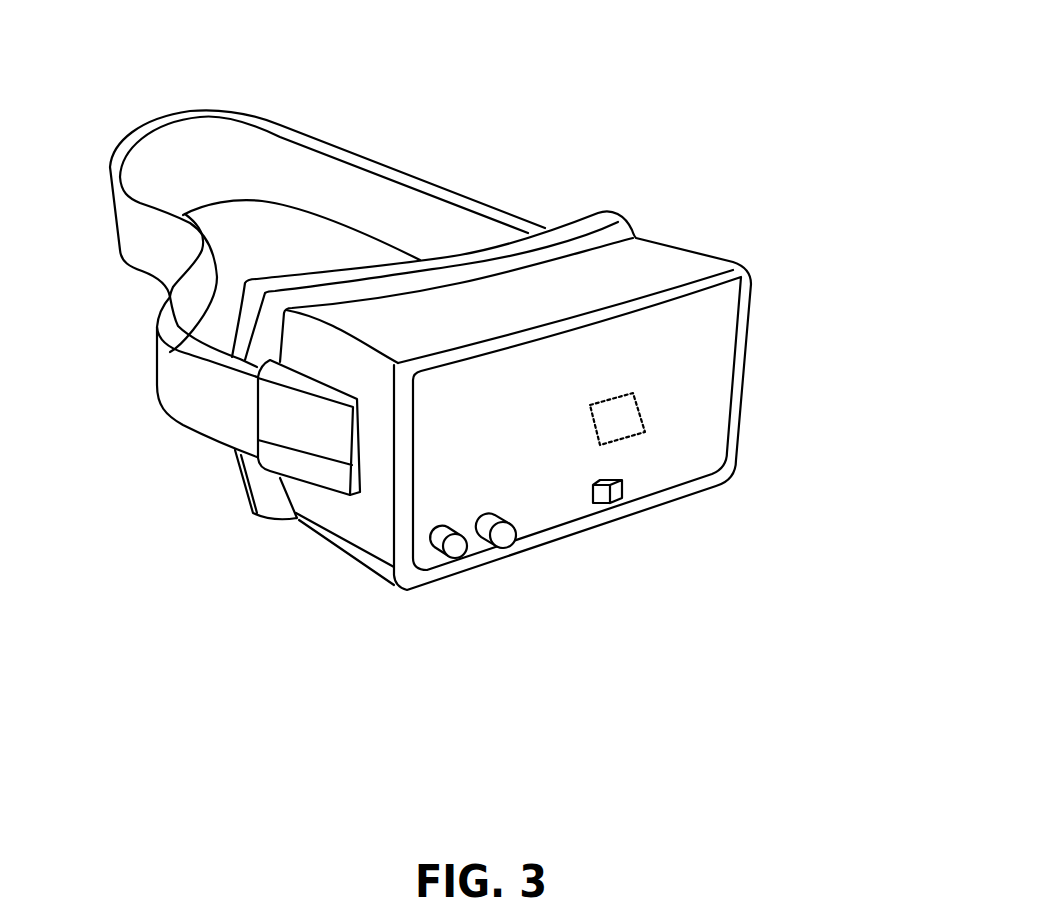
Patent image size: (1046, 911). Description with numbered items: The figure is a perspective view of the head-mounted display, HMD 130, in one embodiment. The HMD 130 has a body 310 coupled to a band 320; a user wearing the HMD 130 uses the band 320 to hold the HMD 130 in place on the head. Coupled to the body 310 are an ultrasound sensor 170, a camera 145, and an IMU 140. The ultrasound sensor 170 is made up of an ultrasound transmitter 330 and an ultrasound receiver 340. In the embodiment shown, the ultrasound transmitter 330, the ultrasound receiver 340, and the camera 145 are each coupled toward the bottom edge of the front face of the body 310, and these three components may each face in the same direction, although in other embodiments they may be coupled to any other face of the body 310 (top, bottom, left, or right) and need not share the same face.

The HMD 130 is at (644, 90).
The band 320 is at (367, 152).
The body 310 is at (750, 290).
The IMU 140 is at (641, 412).
The camera 145 is at (621, 487).
The ultrasound sensor 170 is at (513, 652).
The ultrasound transmitter 330 is at (444, 563).
The ultrasound receiver 340 is at (505, 552).